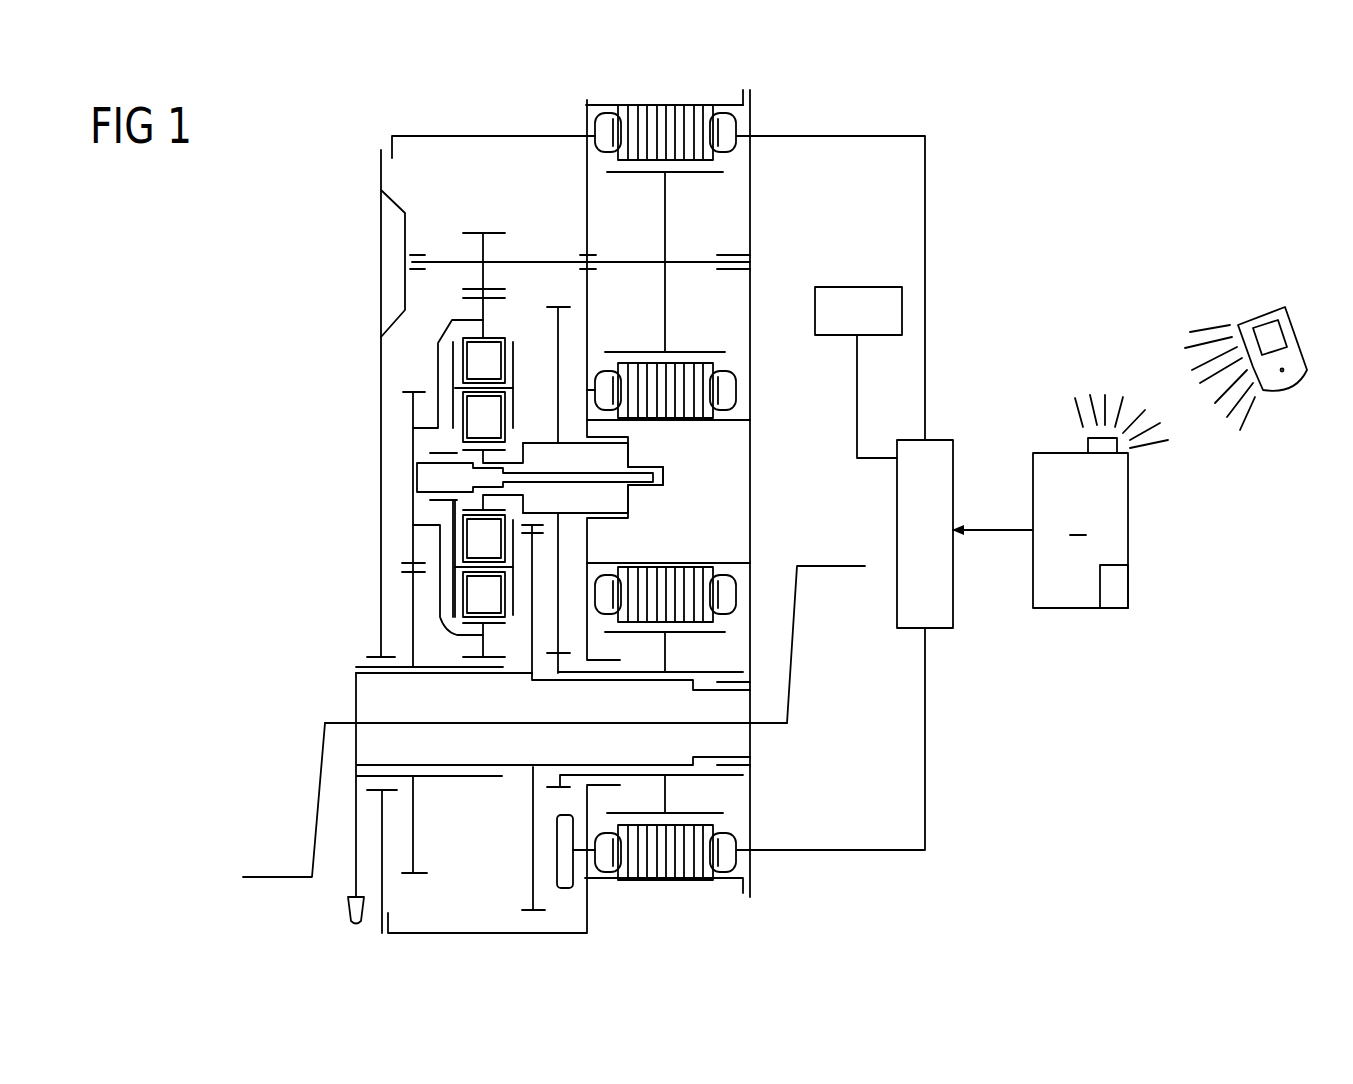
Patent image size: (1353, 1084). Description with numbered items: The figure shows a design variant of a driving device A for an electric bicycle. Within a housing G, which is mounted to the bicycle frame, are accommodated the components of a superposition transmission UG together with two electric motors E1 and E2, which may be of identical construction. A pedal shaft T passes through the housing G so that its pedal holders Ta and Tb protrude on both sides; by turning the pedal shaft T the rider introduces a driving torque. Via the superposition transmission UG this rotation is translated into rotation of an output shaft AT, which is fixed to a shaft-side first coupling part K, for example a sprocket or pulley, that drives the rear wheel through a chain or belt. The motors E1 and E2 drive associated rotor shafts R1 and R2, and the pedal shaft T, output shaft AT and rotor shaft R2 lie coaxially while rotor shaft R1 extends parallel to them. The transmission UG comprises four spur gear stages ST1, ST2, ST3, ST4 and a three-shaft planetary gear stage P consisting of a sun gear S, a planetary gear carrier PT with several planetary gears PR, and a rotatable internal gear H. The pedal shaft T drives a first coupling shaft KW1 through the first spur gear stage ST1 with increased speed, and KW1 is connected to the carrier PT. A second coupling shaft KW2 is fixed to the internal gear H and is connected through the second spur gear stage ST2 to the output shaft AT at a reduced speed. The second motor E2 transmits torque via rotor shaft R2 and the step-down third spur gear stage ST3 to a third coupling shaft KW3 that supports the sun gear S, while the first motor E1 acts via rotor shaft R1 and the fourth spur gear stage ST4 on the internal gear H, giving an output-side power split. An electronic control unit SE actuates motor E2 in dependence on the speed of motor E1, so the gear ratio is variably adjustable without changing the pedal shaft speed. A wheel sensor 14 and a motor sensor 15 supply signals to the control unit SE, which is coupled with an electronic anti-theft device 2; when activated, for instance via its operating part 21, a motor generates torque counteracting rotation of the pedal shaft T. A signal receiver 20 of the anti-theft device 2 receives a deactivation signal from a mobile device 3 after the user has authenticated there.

The housing G is at (457, 133).
The driving device A is at (947, 122).
The superposition transmission UG is at (727, 473).
The first electric motor E1 is at (686, 107).
The second electric motor E2 is at (703, 880).
The first rotor shaft R1 is at (675, 259).
The second rotor shaft R2 is at (685, 668).
The fourth spur gear stage ST4 is at (470, 229).
The third spur gear stage ST3 is at (560, 572).
The second spur gear stage ST2 is at (408, 572).
The first spur gear stage ST1 is at (532, 627).
The internal gear H is at (447, 332).
The planetary gear stage P is at (405, 367).
The planetary gears PR is at (507, 337).
The planetary gear carrier PT is at (515, 390).
The sun gear S is at (458, 452).
The first coupling shaft KW1 is at (507, 432).
The second coupling shaft KW2 is at (422, 484).
The third coupling shaft KW3 is at (612, 457).
The pedal shaft T is at (345, 715).
The pedal holder Ta is at (255, 877).
The pedal holder Tb is at (829, 564).
The shaft-side first coupling part K is at (352, 882).
The output shaft AT is at (356, 777).
The electronic control unit SE is at (925, 534).
The wheel sensor 14 is at (858, 372).
The motor sensor 15 is at (858, 372).
The electronic anti-theft device 2 is at (1079, 509).
The signal receiver 20 is at (1088, 442).
The operating part 21 is at (1115, 592).
The mobile device 3 is at (1282, 295).